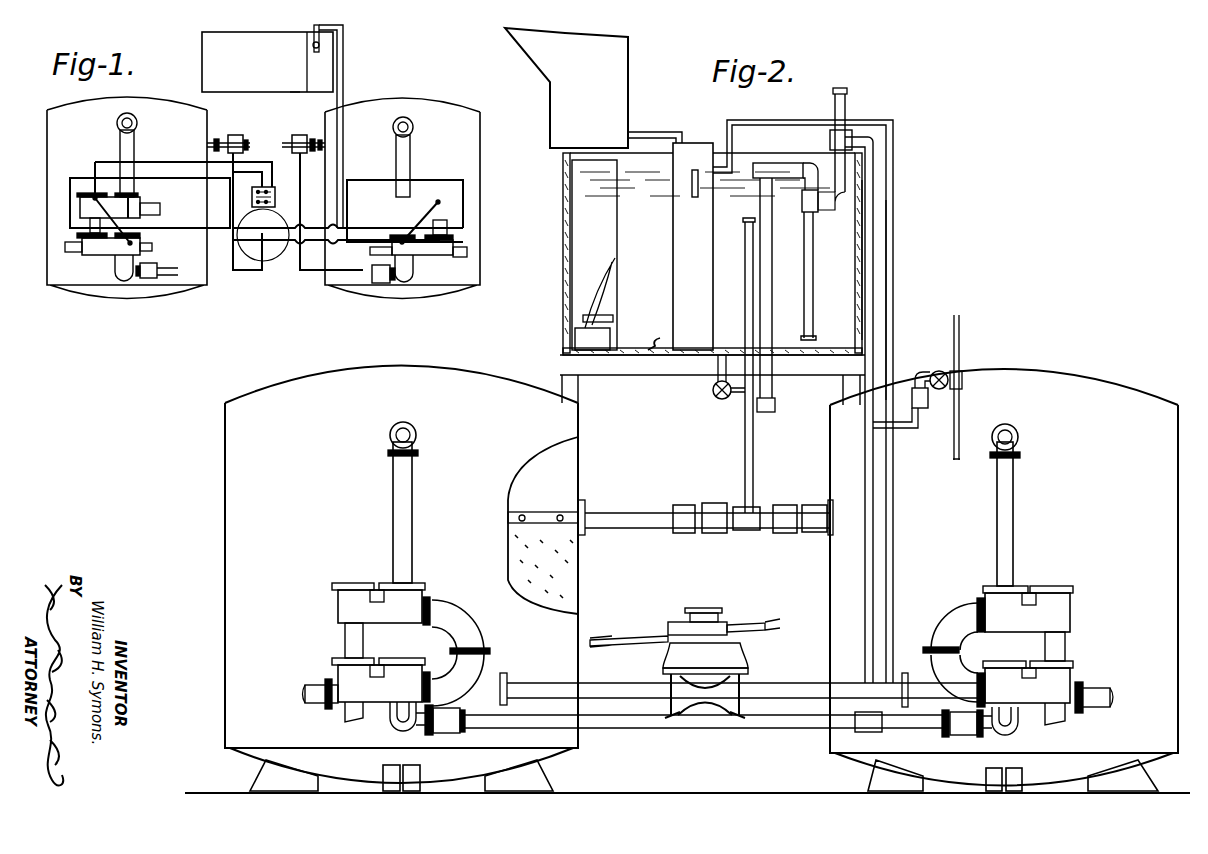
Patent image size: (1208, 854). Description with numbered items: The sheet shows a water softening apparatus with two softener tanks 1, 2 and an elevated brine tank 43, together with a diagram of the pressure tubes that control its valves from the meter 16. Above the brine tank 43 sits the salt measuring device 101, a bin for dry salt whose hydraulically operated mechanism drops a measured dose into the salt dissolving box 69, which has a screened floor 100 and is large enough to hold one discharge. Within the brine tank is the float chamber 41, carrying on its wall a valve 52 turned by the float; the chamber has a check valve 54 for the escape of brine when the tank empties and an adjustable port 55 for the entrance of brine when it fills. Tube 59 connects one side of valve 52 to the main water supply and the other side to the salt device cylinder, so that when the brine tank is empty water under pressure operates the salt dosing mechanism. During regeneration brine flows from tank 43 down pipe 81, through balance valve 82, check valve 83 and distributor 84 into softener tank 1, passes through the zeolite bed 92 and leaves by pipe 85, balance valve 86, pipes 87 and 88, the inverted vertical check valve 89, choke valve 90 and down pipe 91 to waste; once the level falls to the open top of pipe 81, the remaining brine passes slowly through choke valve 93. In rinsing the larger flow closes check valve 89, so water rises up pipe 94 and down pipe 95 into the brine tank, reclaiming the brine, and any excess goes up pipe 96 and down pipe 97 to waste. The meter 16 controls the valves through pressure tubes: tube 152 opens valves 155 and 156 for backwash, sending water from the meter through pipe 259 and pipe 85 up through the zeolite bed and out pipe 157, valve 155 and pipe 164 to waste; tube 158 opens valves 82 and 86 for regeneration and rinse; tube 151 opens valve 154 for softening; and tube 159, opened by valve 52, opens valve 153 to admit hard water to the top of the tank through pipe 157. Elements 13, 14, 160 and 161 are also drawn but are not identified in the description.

In FIG. 2, the softener tank 1 is at (240, 443).
In FIG. 1, the softener tank 1 is at (163, 106).
In FIG. 2, the softener tank 2 is at (1082, 392).
In FIG. 1, the softener tank 2 is at (390, 108).
In FIG. 2, the valve lever 13 is at (620, 635).
In FIG. 2, the valve stem cap 14 is at (680, 612).
In FIG. 2, the meter 16 is at (728, 664).
In FIG. 1, the meter 16 is at (248, 250).
In FIG. 2, the float chamber 41 is at (683, 253).
In FIG. 1, the float chamber 41 is at (306, 73).
In FIG. 2, the brine tank 43 is at (856, 266).
In FIG. 1, the brine tank 43 is at (294, 93).
In FIG. 1, the valve 52 is at (312, 45).
In FIG. 2, the check valve 54 is at (660, 334).
In FIG. 2, the port 55 is at (692, 177).
In FIG. 2, the tube 59 is at (662, 133).
In FIG. 2, the salt dissolving box 69 is at (608, 226).
In FIG. 2, the pipe 81 is at (750, 224).
In FIG. 2, the balance valve 82 is at (728, 490).
In FIG. 1, the balance valve 82 is at (233, 135).
In FIG. 2, the check valve 83 is at (690, 506).
In FIG. 2, the distributor 84 is at (560, 497).
In FIG. 2, the pipe 85 is at (395, 722).
In FIG. 1, the pipe 85 is at (118, 262).
In FIG. 2, the balance valve 86 is at (455, 727).
In FIG. 1, the balance valve 86 is at (150, 280).
In FIG. 2, the pipe 87 is at (652, 722).
In FIG. 2, the pipe 88 is at (866, 465).
In FIG. 2, the inverted vertical check valve 89 is at (912, 385).
In FIG. 2, the choke valve 90 is at (946, 372).
In FIG. 2, the down pipe 91 is at (963, 455).
In FIG. 2, the zeolite bed 92 is at (562, 560).
In FIG. 2, the choke valve 93 is at (712, 392).
In FIG. 2, the pipe 94 is at (893, 190).
In FIG. 2, the pipe 95 is at (812, 232).
In FIG. 2, the pipe 96 is at (833, 158).
In FIG. 2, the pipe 97 is at (780, 300).
In FIG. 2, the screened floor 100 is at (610, 298).
In FIG. 2, the salt measuring device 101 is at (606, 101).
In FIG. 1, the tube 151 is at (172, 203).
In FIG. 1, the tube 152 is at (190, 160).
In FIG. 2, the valve 153 is at (420, 592).
In FIG. 1, the valve 153 is at (132, 203).
In FIG. 2, the valve 154 is at (345, 672).
In FIG. 1, the valve 154 is at (85, 256).
In FIG. 2, the valve 155 is at (368, 590).
In FIG. 1, the valve 155 is at (85, 207).
In FIG. 2, the valve 156 is at (410, 672).
In FIG. 1, the valve 156 is at (140, 250).
In FIG. 2, the pipe 157 is at (408, 490).
In FIG. 1, the pipe 157 is at (122, 143).
In FIG. 1, the tube 158 is at (246, 166).
In FIG. 1, the tube 159 is at (343, 55).
In FIG. 1, the conductor 160 is at (350, 238).
In FIG. 1, the conductor 161 is at (330, 222).
In FIG. 2, the pipe 164 is at (360, 641).
In FIG. 1, the pipe 164 is at (86, 270).
In FIG. 2, the pipe 259 is at (594, 685).